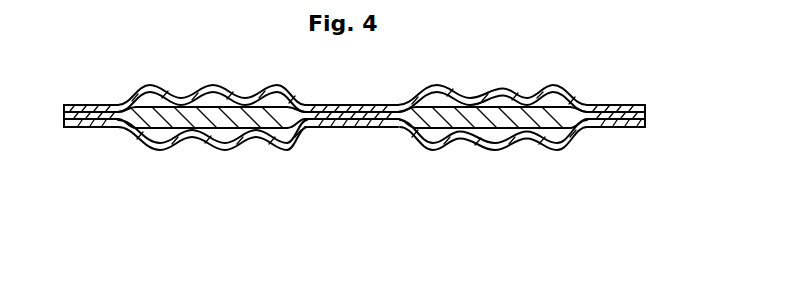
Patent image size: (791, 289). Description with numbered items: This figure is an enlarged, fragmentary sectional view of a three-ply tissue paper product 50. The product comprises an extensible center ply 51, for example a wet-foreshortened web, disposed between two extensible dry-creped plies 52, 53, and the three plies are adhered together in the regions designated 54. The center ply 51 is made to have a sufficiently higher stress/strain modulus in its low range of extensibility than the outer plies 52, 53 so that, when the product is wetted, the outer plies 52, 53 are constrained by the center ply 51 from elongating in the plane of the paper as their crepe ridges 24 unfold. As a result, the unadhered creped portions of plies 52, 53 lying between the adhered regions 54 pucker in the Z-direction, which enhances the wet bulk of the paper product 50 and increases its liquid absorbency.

The crepe ridges 24 is at (277, 85).
The paper product 50 is at (549, 176).
The extensible center ply 51 is at (648, 118).
The extensible dry-creped ply 52 is at (645, 108).
The extensible dry-creped ply 53 is at (647, 128).
The adhered regions 54 is at (111, 96).